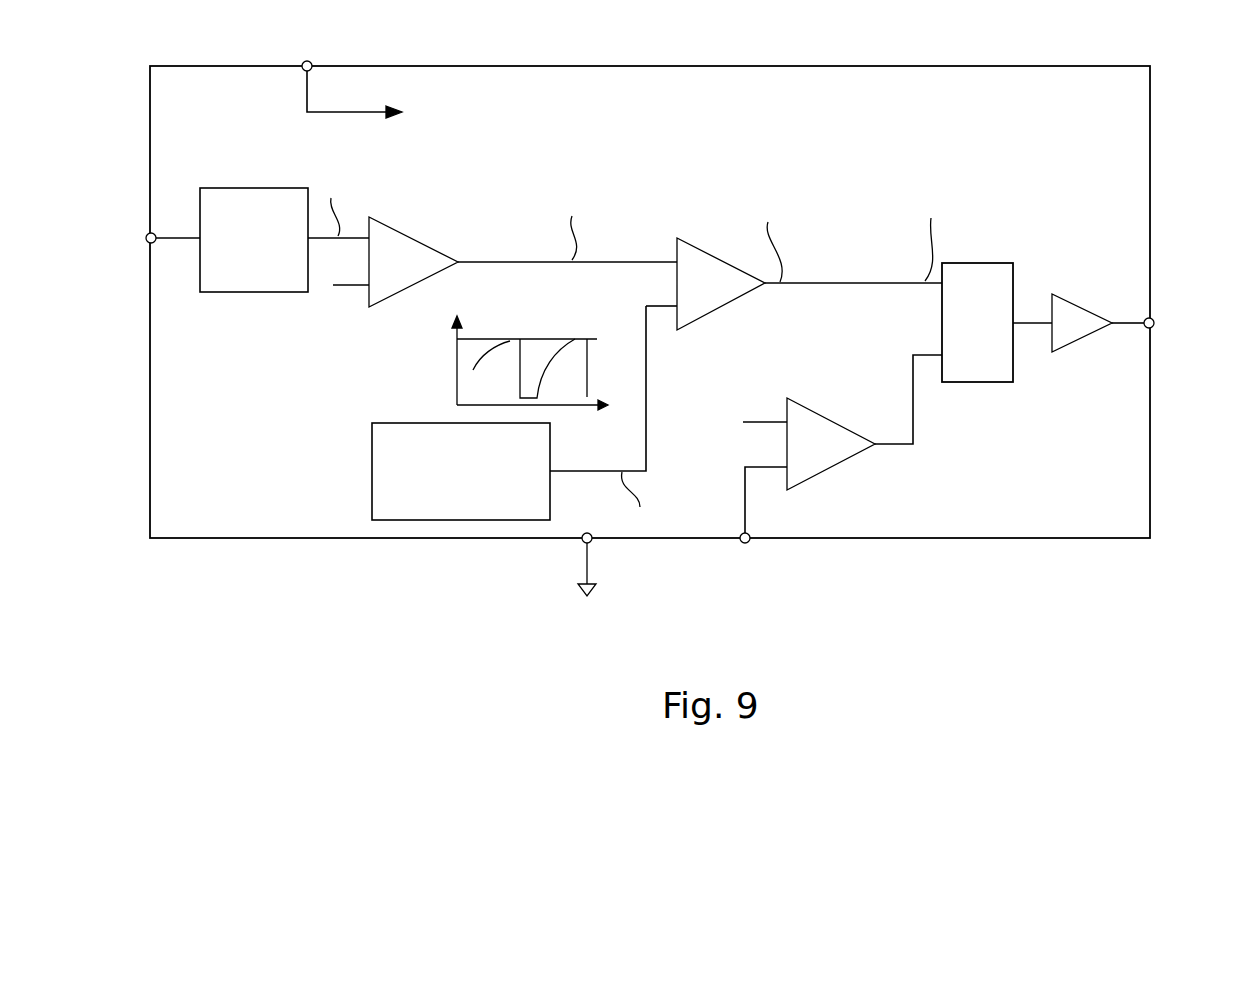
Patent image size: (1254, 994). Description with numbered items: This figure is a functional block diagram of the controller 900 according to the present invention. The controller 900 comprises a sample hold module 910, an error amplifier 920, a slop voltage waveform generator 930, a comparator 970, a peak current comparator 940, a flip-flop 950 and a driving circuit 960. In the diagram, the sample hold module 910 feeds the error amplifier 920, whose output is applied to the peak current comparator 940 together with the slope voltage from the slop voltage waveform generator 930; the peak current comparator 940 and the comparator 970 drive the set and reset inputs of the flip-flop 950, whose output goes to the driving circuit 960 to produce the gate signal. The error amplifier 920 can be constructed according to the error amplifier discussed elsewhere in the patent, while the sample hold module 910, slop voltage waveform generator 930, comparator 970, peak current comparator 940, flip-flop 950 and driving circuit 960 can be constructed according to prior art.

The controller 900 is at (668, 315).
The sample hold module 910 is at (257, 196).
The error amplifier 920 is at (418, 236).
The slop voltage waveform generator 930 is at (435, 430).
The peak current comparator 940 is at (730, 258).
The flip-flop 950 is at (985, 384).
The driving circuit 960 is at (1085, 340).
The comparator 970 is at (837, 420).